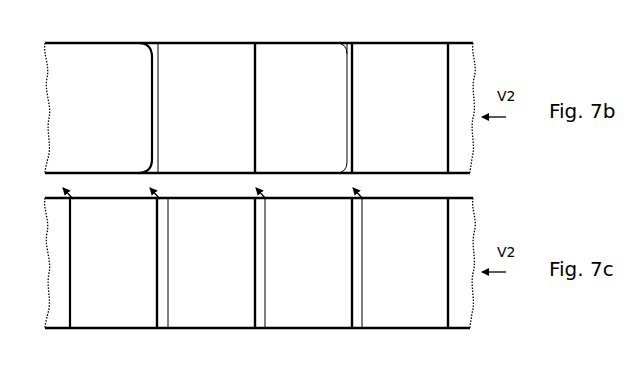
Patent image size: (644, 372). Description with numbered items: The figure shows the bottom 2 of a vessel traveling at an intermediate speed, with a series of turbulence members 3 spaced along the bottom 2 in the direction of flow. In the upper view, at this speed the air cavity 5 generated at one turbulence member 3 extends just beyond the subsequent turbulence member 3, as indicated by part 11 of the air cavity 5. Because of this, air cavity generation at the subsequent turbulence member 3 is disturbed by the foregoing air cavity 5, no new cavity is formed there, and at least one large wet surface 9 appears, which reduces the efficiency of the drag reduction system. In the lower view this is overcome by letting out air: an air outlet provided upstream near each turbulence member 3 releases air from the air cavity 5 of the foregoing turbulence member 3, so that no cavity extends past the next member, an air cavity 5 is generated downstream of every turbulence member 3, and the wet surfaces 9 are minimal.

In FIG. 7B, the bottom 2 is at (55, 124).
In FIG. 7C, the bottom 2 is at (55, 269).
In FIG. 7B, the turbulence member 3 is at (259, 63).
In FIG. 7C, the turbulence member 3 is at (452, 228).
In FIG. 7B, the air cavity 5 is at (233, 60).
In FIG. 7C, the air cavity 5 is at (427, 221).
In FIG. 7B, the wet surface 9 is at (101, 78).
In FIG. 7C, the wet surface 9 is at (258, 305).
In FIG. 7B, the part of the air cavity 11 is at (348, 42).